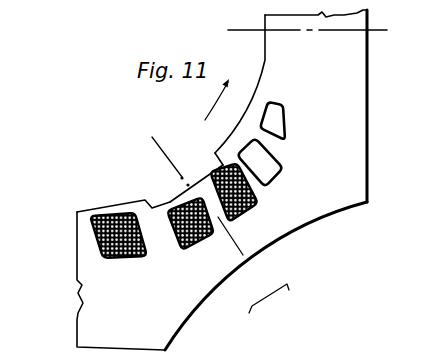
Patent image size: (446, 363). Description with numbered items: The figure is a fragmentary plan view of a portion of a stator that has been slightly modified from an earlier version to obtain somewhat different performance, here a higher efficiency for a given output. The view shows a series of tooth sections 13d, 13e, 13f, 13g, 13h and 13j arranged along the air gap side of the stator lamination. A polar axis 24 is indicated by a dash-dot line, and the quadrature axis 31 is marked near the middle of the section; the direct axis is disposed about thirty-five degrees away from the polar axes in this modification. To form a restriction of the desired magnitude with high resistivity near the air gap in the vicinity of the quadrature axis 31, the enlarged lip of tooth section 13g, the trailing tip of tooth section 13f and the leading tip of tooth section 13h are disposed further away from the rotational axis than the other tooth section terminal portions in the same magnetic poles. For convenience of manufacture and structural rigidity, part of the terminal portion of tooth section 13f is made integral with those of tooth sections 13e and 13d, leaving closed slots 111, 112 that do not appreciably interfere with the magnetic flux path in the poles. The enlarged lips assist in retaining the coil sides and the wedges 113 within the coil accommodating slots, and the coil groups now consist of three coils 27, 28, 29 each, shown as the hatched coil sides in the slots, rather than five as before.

The tooth section 13d is at (280, 63).
The polar axis 24 is at (375, 33).
The closed slot 111 is at (280, 120).
The tooth section 13e is at (275, 148).
The closed slot 112 is at (241, 147).
The tooth section 13f is at (257, 188).
The wedge 113 is at (110, 212).
The quadrature axis 31 is at (170, 164).
The tooth section 13j is at (90, 248).
The coil 29 is at (117, 260).
The tooth section 13h is at (158, 240).
The coil 28 is at (207, 243).
The coil 27 is at (249, 204).
The tooth section 13g is at (225, 218).